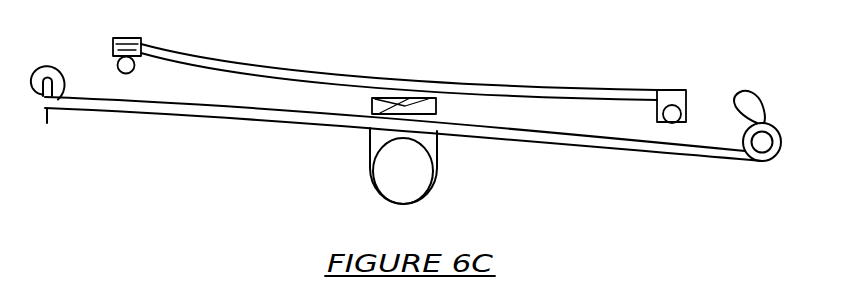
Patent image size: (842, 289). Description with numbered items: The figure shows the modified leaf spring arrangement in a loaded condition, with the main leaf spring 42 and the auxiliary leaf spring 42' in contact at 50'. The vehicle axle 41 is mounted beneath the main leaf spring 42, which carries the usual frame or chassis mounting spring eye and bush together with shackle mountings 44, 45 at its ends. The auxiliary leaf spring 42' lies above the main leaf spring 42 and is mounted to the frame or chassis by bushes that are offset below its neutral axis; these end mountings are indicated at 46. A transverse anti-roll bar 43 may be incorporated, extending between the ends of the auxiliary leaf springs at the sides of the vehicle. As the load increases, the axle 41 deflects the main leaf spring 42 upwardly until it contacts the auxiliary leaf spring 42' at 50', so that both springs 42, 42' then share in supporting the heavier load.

The vehicle axle 41 is at (405, 178).
The main leaf spring 42 is at (403, 133).
The auxiliary leaf spring 42' is at (399, 61).
The transverse anti-roll bar 43 is at (122, 74).
The shackle mounting 44 is at (43, 112).
The shackle mounting 45 is at (755, 111).
The clamp 46 is at (113, 47).
The contact point 50' is at (354, 144).